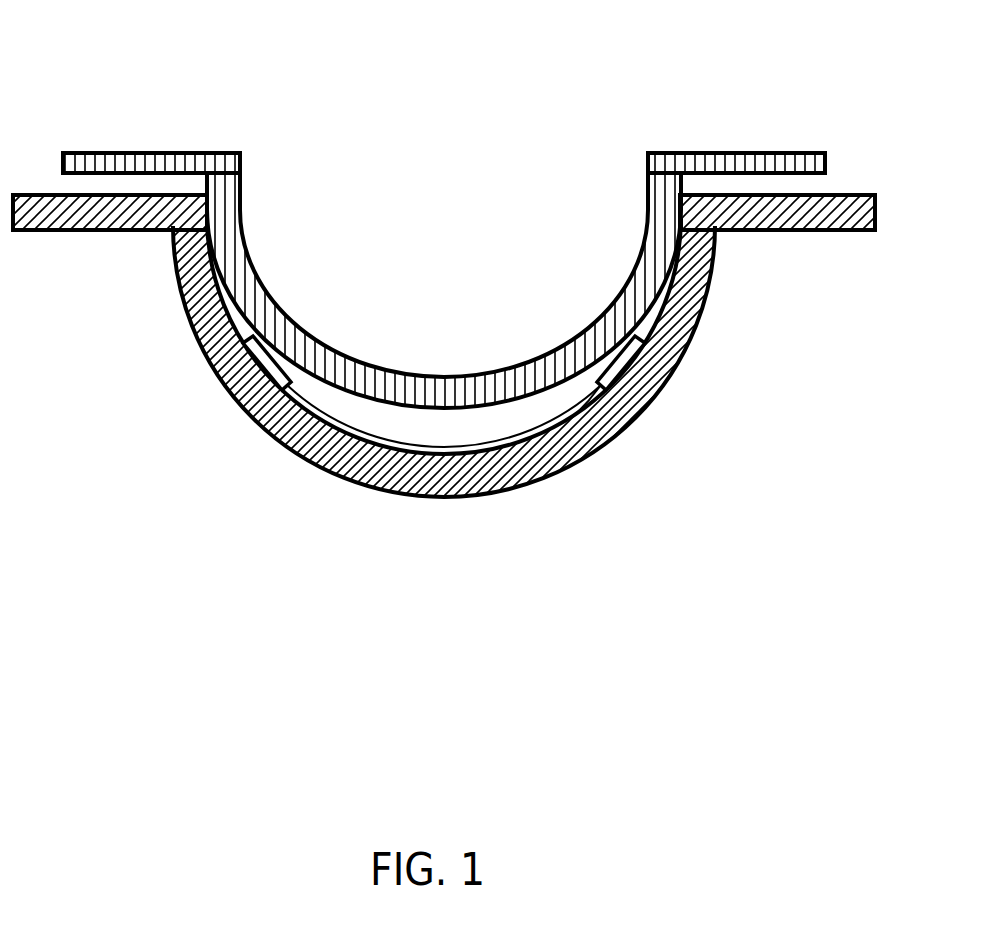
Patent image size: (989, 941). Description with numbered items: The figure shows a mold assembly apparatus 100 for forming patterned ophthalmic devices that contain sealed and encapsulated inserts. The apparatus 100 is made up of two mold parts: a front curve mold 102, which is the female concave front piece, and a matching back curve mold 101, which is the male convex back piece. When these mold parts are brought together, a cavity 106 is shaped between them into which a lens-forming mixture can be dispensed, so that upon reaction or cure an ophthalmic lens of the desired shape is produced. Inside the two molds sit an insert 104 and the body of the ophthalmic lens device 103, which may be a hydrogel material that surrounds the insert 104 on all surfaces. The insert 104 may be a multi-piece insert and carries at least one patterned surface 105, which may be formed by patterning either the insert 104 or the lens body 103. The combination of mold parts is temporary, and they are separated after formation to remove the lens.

The apparatus 100 is at (444, 290).
The back curve mold 101 is at (630, 257).
The front curve mold 102 is at (252, 397).
The body of the Ophthalmic Lens device 103 is at (383, 410).
The insert 104 is at (638, 355).
The patterned surface 105 is at (607, 396).
The cavity 106 is at (232, 316).